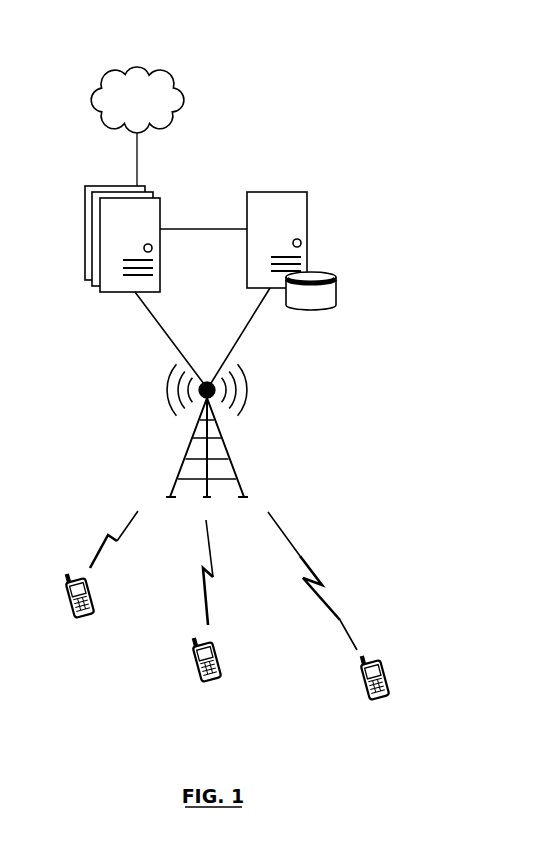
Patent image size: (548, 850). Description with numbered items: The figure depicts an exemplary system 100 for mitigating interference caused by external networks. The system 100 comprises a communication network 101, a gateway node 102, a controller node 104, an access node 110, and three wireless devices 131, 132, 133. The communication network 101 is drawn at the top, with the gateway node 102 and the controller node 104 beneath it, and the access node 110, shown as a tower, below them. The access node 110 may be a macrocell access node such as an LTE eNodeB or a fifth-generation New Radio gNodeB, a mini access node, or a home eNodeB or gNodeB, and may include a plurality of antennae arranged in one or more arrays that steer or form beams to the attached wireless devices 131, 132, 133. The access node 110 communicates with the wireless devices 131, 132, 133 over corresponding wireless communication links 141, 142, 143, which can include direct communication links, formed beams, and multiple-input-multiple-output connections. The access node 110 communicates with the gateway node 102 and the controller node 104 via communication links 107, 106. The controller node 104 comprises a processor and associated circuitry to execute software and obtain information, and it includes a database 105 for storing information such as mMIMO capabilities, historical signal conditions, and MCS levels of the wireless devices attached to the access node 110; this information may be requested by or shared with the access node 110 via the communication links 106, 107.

The system 100 is at (318, 42).
The communication network 101 is at (121, 110).
The gateway node 102 is at (103, 185).
The controller node 104 is at (307, 192).
The database 105 is at (333, 273).
The communication link 106 is at (247, 327).
The communication link 107 is at (150, 320).
The access node 110 is at (230, 462).
The wireless device 131 is at (86, 614).
The wireless device 132 is at (213, 683).
The wireless device 133 is at (382, 700).
The wireless communication link 141 is at (103, 545).
The wireless communication link 142 is at (206, 590).
The wireless communication link 143 is at (325, 602).